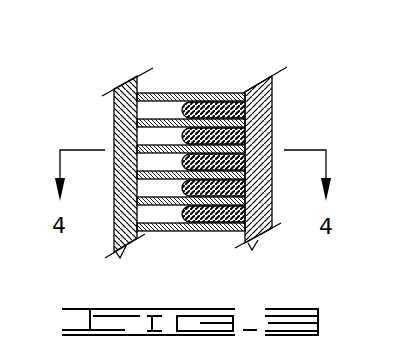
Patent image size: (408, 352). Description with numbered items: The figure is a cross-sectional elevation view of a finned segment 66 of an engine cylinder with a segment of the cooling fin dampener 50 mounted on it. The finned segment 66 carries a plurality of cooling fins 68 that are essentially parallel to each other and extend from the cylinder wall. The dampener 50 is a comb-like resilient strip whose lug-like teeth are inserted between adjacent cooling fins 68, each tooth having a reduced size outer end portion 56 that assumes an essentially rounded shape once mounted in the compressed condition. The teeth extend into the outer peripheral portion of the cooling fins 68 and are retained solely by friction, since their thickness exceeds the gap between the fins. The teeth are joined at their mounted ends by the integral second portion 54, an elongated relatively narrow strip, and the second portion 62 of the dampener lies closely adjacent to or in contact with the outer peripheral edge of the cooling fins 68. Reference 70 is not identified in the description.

The cooling fin dampener 50 is at (308, 100).
The finned segment 66 is at (125, 62).
The second portion 62 is at (258, 212).
The outer end portion 56 is at (187, 133).
The cooling fins 68 is at (236, 93).
The second portion 54 is at (265, 250).
The lower end of side wall 70 is at (112, 236).